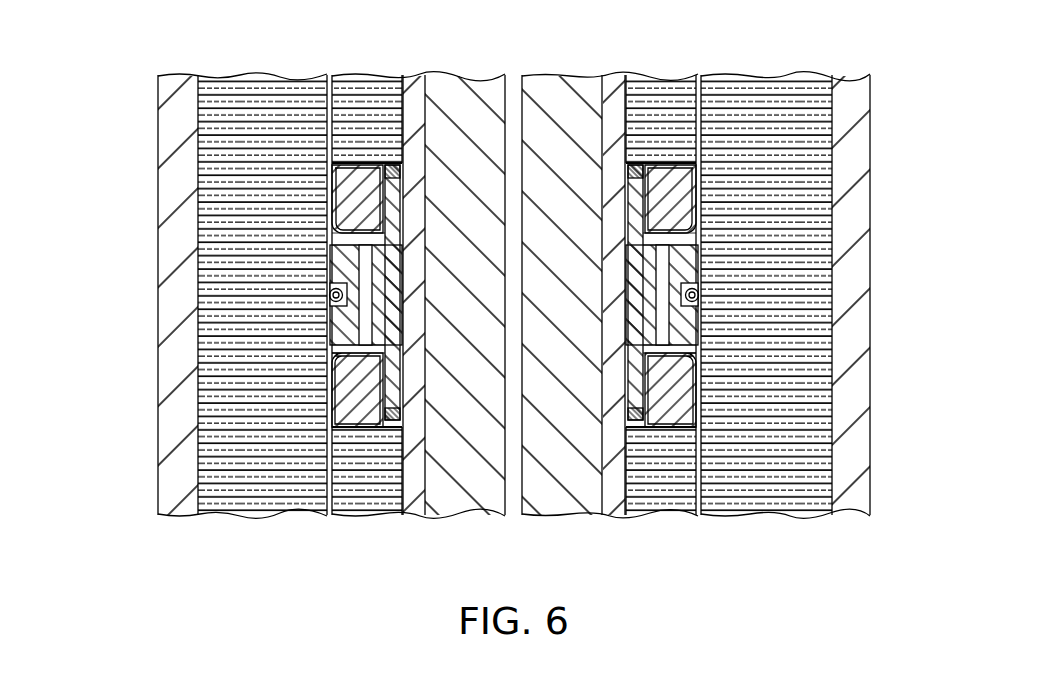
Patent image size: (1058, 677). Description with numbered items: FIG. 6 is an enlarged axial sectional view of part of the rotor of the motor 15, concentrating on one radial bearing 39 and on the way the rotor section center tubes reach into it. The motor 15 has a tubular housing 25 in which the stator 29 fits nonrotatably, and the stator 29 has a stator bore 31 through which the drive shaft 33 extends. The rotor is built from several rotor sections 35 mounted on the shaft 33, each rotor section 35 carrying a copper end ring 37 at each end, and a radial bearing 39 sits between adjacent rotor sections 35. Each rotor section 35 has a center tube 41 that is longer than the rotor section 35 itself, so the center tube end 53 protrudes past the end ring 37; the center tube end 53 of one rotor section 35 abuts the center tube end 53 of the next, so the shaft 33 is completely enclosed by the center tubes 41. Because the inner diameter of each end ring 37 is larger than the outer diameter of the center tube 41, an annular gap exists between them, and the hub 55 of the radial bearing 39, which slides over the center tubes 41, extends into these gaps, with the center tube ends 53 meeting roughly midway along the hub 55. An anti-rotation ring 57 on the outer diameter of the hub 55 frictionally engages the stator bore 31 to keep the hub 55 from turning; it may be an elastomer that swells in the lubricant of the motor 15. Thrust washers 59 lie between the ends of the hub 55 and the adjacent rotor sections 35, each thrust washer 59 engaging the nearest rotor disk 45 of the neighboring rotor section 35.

The motor 15 is at (150, 99).
The tubular housing 25 is at (170, 128).
The stator 29 is at (820, 186).
The stator bore 31 is at (697, 258).
The drive shaft 33 is at (555, 502).
The rotor section 35 is at (350, 73).
The end ring 37 is at (686, 186).
The radial bearing 39 is at (345, 352).
The center tube 41 is at (417, 105).
The rotor disk 45 is at (637, 165).
The center tube end 53 is at (615, 300).
The hub 55 is at (343, 328).
The anti-rotation ring 57 is at (330, 292).
The thrust washer 59 is at (628, 165).